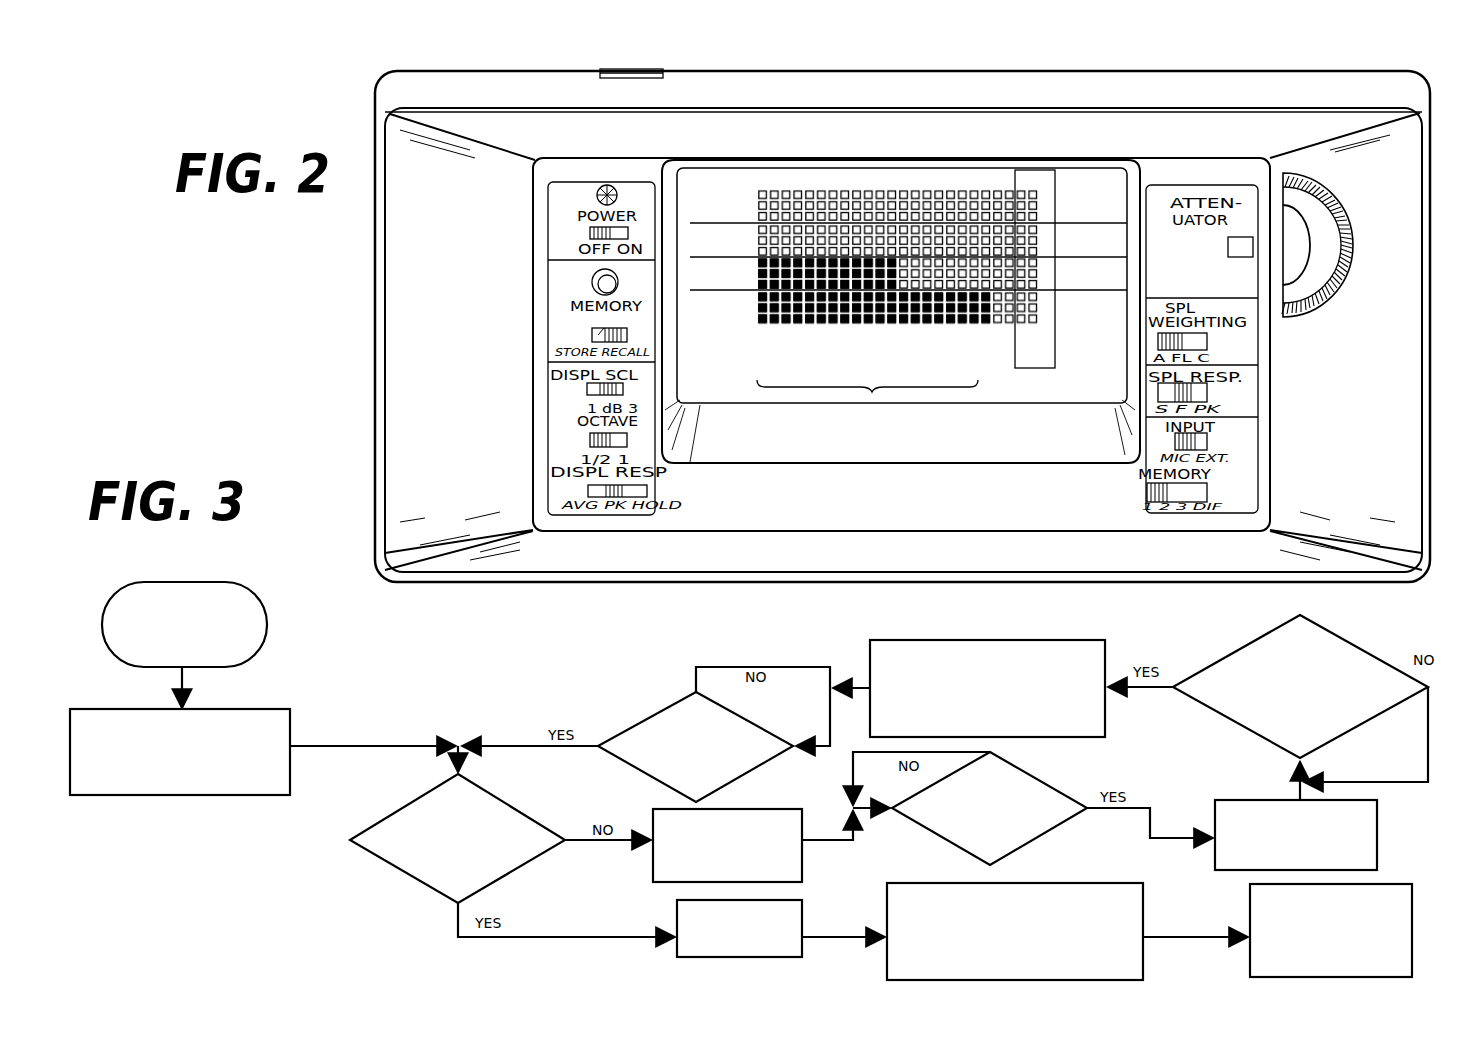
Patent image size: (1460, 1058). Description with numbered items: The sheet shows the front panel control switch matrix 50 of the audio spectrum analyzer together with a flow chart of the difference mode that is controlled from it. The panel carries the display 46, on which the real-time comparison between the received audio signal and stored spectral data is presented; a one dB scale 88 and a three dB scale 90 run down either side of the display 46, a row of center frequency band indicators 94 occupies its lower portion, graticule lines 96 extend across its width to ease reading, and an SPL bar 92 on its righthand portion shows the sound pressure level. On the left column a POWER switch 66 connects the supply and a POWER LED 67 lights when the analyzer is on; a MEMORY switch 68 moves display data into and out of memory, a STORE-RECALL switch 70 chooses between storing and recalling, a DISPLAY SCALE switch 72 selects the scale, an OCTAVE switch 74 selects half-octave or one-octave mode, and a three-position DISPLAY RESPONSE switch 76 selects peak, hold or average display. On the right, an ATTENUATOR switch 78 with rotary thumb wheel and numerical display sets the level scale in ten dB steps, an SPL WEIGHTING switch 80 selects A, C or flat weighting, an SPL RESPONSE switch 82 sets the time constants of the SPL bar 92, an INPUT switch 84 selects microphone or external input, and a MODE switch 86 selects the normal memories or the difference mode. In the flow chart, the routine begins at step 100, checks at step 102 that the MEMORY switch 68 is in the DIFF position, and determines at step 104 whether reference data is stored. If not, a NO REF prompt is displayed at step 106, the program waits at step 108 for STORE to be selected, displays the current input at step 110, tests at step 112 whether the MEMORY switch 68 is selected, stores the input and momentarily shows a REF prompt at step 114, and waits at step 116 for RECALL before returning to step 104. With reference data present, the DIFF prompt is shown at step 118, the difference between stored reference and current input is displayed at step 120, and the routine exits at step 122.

In FIG. 2, the display 46 is at (901, 296).
In FIG. 2, the front panel control switch matrix 50 is at (375, 318).
In FIG. 2, the POWER switch 66 is at (590, 233).
In FIG. 2, the POWER LED 67 is at (607, 185).
In FIG. 2, the MEMORY switch 68 is at (592, 284).
In FIG. 2, the STORE-RECALL switch 70 is at (592, 335).
In FIG. 2, the DISPLAY SCALE switch 72 is at (587, 389).
In FIG. 2, the OCTAVE switch 74 is at (590, 440).
In FIG. 2, the DISPLAY RESPONSE switch 76 is at (588, 491).
In FIG. 2, the ATTENUATOR switch 78 is at (1255, 247).
In FIG. 2, the SPL WEIGHTING switch 80 is at (1195, 343).
In FIG. 2, the SPL RESPONSE switch 82 is at (1200, 392).
In FIG. 2, the INPUT switch 84 is at (1200, 442).
In FIG. 2, the MODE switch 86 is at (1195, 490).
In FIG. 2, the 1 dB scale 88 is at (718, 190).
In FIG. 2, the 3 dB scale 90 is at (735, 195).
In FIG. 2, the SPL bar 92 is at (1040, 330).
In FIG. 2, the center frequency band indicators 94 is at (872, 392).
In FIG. 2, the graticule lines 96 is at (1130, 238).
In FIG. 3, the begin difference mode step 100 is at (224, 595).
In FIG. 3, the MEMORY switch position step 102 is at (247, 718).
In FIG. 3, the reference data stored decision step 104 is at (418, 806).
In FIG. 3, the NO REF prompt display step 106 is at (653, 820).
In FIG. 3, the STORE selected decision step 108 is at (1050, 815).
In FIG. 3, the display current input step 110 is at (1238, 808).
In FIG. 3, the MEMORY switch selected decision step 112 is at (1272, 640).
In FIG. 3, the store current input step 114 is at (1075, 646).
In FIG. 3, the RECALL selected decision step 116 is at (672, 714).
In FIG. 3, the DIFF prompt display step 118 is at (694, 948).
In FIG. 3, the display difference step 120 is at (895, 920).
In FIG. 3, the exit difference mode step 122 is at (1260, 912).